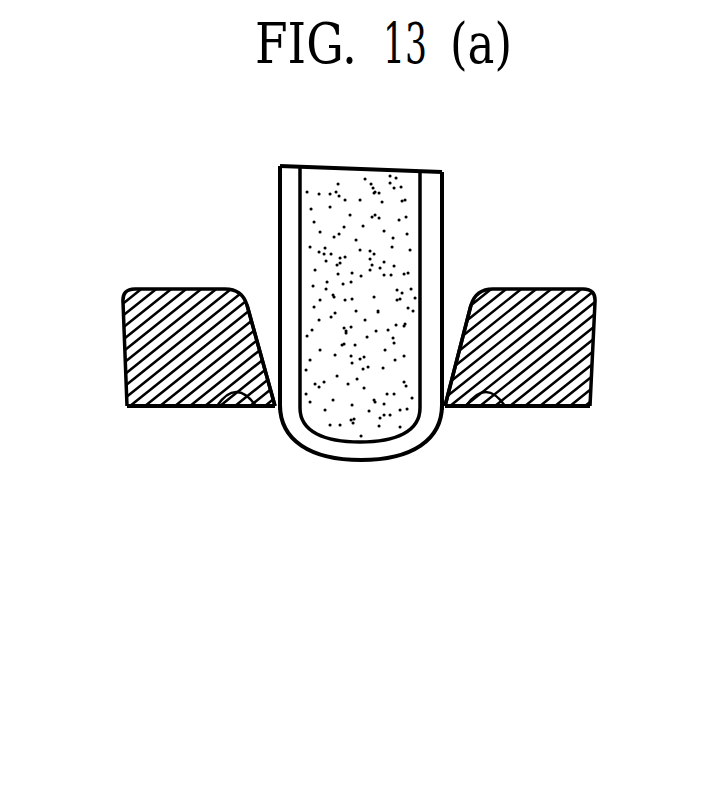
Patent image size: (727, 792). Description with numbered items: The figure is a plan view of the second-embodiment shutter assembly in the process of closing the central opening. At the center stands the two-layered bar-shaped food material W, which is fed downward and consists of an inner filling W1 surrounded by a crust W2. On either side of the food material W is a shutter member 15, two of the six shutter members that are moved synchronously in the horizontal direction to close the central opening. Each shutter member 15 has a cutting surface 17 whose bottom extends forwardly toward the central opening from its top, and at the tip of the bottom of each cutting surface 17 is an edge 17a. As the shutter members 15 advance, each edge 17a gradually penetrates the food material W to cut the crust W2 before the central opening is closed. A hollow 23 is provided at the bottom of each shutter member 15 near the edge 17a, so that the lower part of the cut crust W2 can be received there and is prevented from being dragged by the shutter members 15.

The bar-shaped food material W is at (329, 300).
The filling W1 is at (410, 245).
The crust W2 is at (288, 255).
The shutter member 15 is at (145, 285).
The cutting surface 17 is at (245, 310).
The edge 17a is at (275, 410).
The hollow 23 is at (235, 410).